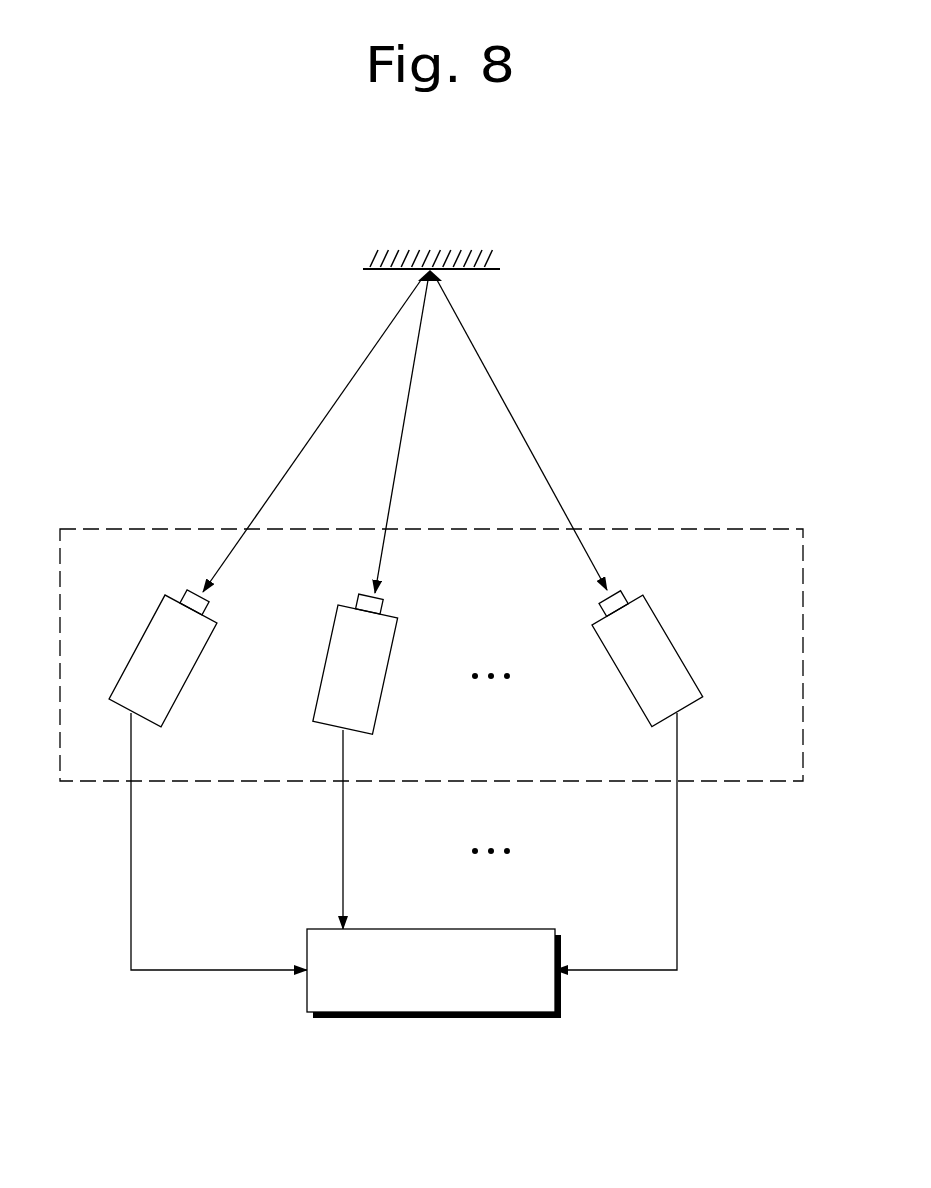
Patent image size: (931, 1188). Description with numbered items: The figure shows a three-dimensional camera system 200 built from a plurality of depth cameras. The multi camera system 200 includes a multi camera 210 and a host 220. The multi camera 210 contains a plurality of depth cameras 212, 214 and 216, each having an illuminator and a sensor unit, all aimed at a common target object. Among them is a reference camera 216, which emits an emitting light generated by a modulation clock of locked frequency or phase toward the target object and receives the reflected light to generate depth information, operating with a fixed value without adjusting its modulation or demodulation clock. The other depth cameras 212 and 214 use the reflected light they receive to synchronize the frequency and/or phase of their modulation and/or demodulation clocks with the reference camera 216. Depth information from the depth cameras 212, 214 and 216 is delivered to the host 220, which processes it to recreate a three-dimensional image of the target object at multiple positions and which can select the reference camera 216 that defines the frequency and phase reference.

The three-dimensional camera system 200 is at (756, 193).
The multi camera 210 is at (690, 529).
The depth camera 212 is at (175, 700).
The depth camera 214 is at (378, 705).
The reference camera 216 is at (638, 710).
The host 220 is at (520, 929).